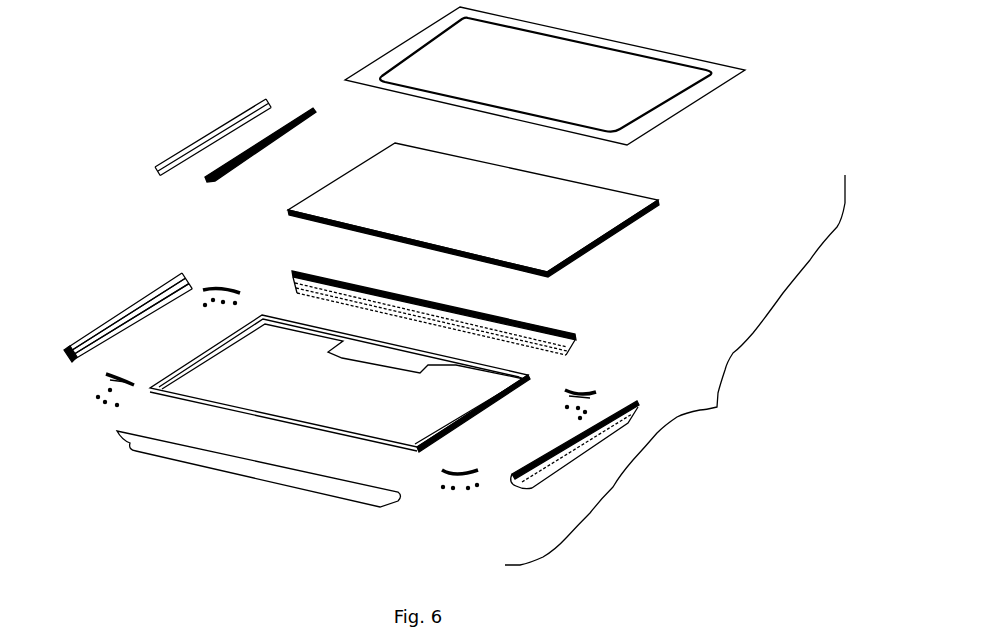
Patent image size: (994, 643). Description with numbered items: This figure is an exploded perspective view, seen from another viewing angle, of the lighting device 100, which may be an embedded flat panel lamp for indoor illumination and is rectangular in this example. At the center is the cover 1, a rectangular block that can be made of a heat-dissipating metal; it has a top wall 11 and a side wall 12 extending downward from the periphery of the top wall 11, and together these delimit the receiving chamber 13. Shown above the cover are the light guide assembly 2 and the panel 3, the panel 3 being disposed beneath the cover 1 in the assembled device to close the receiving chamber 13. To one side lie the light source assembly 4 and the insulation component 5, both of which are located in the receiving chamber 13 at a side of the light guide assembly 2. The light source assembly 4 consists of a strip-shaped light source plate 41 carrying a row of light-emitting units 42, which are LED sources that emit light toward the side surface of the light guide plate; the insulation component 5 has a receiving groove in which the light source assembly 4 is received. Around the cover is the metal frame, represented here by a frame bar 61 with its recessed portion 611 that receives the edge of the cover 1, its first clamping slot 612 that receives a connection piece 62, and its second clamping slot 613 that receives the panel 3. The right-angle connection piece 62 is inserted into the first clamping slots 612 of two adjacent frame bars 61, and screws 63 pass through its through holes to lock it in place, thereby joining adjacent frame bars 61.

The cover 1 is at (430, 413).
The top wall 11 is at (500, 397).
The side wall 12 is at (500, 371).
The receiving chamber 13 is at (378, 415).
The light guide assembly 2 is at (588, 225).
The panel 3 is at (637, 100).
The light source assembly 4 is at (205, 179).
The light source plate 41 is at (206, 180).
The light-emitting units 42 is at (207, 180).
The insulation component 5 is at (156, 176).
The frame bars 61 is at (130, 303).
The recessed portion 611 is at (97, 340).
The first clamping slot 612 is at (80, 362).
The second clamping slot 613 is at (67, 353).
The connection pieces 62 is at (127, 373).
The screws 63 is at (117, 407).
The lighting device 100 is at (675, 370).